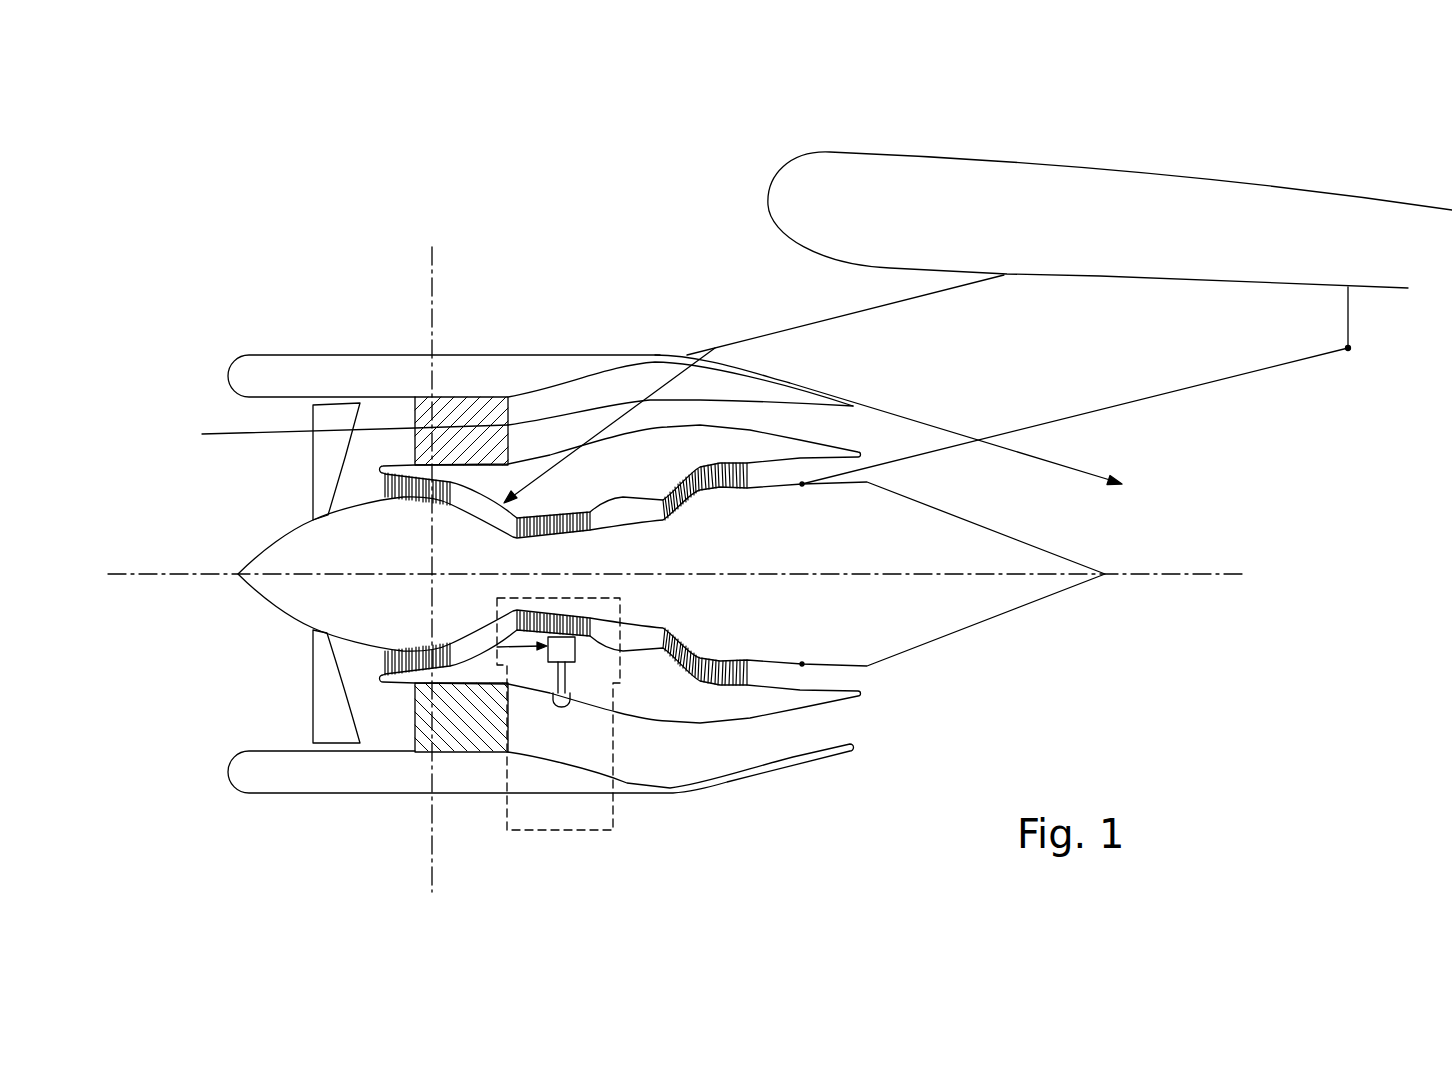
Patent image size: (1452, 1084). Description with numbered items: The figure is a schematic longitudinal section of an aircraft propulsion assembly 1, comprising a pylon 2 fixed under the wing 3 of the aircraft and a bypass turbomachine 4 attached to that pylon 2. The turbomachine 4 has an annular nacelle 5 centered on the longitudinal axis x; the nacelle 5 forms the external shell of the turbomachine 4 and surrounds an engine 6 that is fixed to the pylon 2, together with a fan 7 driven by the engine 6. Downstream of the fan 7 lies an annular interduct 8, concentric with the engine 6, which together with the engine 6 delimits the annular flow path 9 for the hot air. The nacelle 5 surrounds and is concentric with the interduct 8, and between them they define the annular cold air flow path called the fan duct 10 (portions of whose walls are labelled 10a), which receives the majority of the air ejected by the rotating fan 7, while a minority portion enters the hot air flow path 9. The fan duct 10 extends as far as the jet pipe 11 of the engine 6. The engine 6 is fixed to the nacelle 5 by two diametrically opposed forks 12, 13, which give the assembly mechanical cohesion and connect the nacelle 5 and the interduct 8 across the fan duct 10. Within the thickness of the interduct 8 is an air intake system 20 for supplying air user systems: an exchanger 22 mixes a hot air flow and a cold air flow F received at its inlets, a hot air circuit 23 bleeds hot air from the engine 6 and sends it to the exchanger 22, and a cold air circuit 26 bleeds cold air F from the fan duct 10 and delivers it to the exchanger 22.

The propulsion assembly 1 is at (280, 196).
The pylon 2 is at (1250, 362).
The wing 3 is at (1031, 193).
The bypass turbomachine 4 is at (185, 363).
The nacelle 5 is at (320, 367).
The engine 6 is at (845, 613).
The fan 7 is at (313, 708).
The interduct 8 is at (848, 452).
The annular flow path for the hot air 9 is at (460, 490).
The fan duct 10 is at (806, 729).
The nozzle wall portion 10a is at (555, 380).
The jet pipe 11 is at (1016, 591).
The fork 12 is at (493, 397).
The fork 13 is at (425, 737).
The air intake system 20 is at (563, 831).
The exchanger 22 is at (576, 653).
The hot air circuit 23 is at (527, 658).
The cold air circuit 26 is at (573, 681).
The cold air flow F is at (227, 437).
The longitudinal axis x is at (1173, 573).